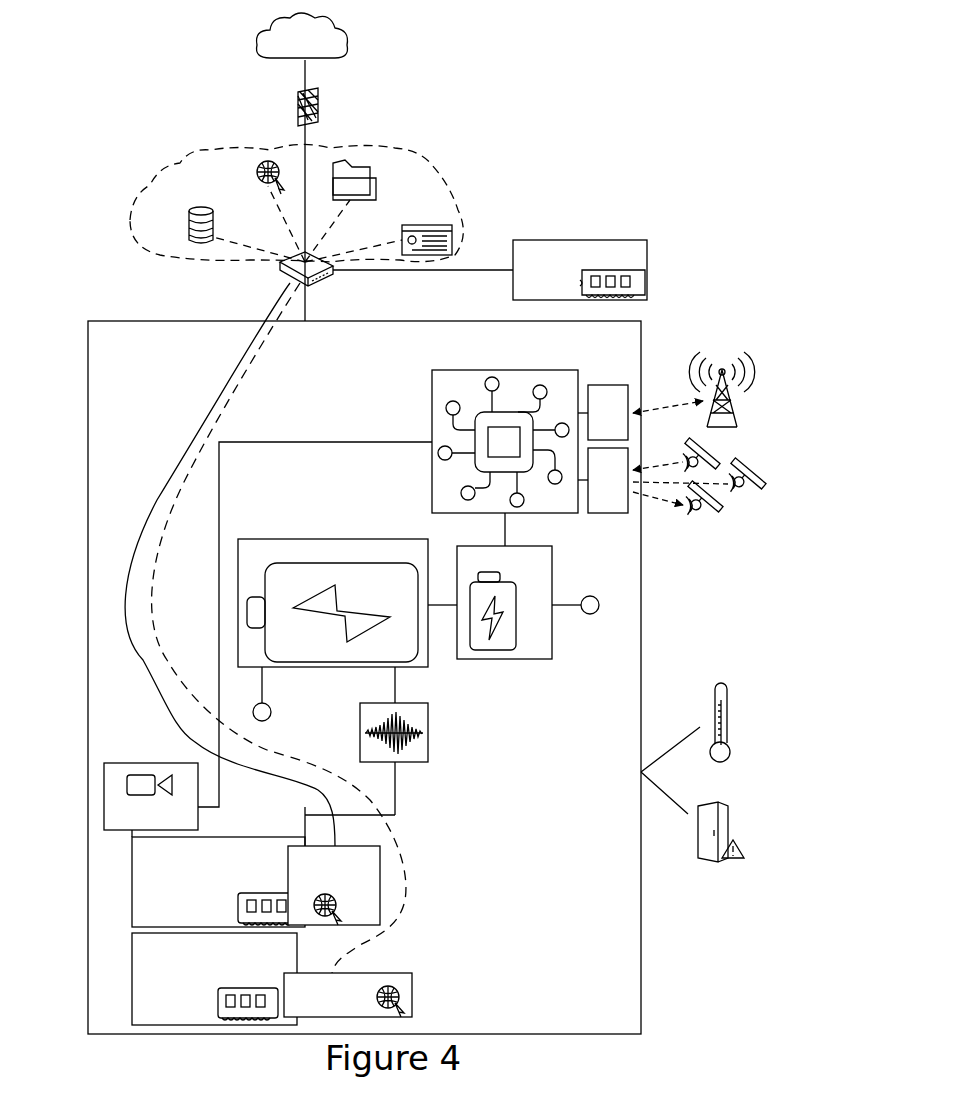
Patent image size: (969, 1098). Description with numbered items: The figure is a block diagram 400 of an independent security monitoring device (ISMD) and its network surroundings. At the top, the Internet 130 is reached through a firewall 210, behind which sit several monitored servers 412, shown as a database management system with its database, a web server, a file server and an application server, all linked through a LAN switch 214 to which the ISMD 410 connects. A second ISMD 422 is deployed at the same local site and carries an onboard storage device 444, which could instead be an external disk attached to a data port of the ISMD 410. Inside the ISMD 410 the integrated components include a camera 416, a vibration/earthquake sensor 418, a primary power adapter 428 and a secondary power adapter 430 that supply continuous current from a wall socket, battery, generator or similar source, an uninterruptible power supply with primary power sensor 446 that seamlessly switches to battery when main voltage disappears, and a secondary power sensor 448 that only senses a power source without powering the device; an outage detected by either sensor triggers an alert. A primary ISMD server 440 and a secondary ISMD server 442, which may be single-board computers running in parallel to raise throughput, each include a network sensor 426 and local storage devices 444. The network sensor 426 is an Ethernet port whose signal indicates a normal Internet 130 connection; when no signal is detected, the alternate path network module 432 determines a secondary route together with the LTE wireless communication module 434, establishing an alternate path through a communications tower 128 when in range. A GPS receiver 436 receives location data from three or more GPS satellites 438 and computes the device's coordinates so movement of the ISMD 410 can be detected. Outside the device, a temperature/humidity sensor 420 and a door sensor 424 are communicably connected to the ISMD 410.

The block diagram 400 is at (577, 54).
The Internet 130 is at (268, 42).
The firewall 210 is at (320, 96).
The monitored servers 412 is at (205, 147).
The router 214 is at (282, 266).
The independent security monitoring device (ISMD) 410 is at (130, 301).
The second ISMD 422 is at (625, 228).
The storage device 444 is at (618, 270).
The alternate path network (APN) module 432 is at (508, 403).
The LTE wireless communication module 434 is at (608, 394).
The GPS receiver 436 is at (610, 503).
The communications tower 128 is at (719, 365).
The GPS satellites 438 is at (710, 513).
The uninterruptible power supply (UPS) with primary power sensor 446 is at (283, 568).
The secondary power sensor 448 is at (478, 585).
The secondary power adapter 430 is at (592, 596).
The primary power adapter 428 is at (272, 711).
The vibration/earthquake sensor 418 is at (372, 710).
The camera 416 is at (143, 790).
The primary ISMD server 440 is at (218, 882).
The secondary ISMD server 442 is at (214, 979).
The network sensor 426 is at (338, 909).
The temperature/humidity sensor 420 is at (715, 693).
The door sensor 424 is at (707, 858).